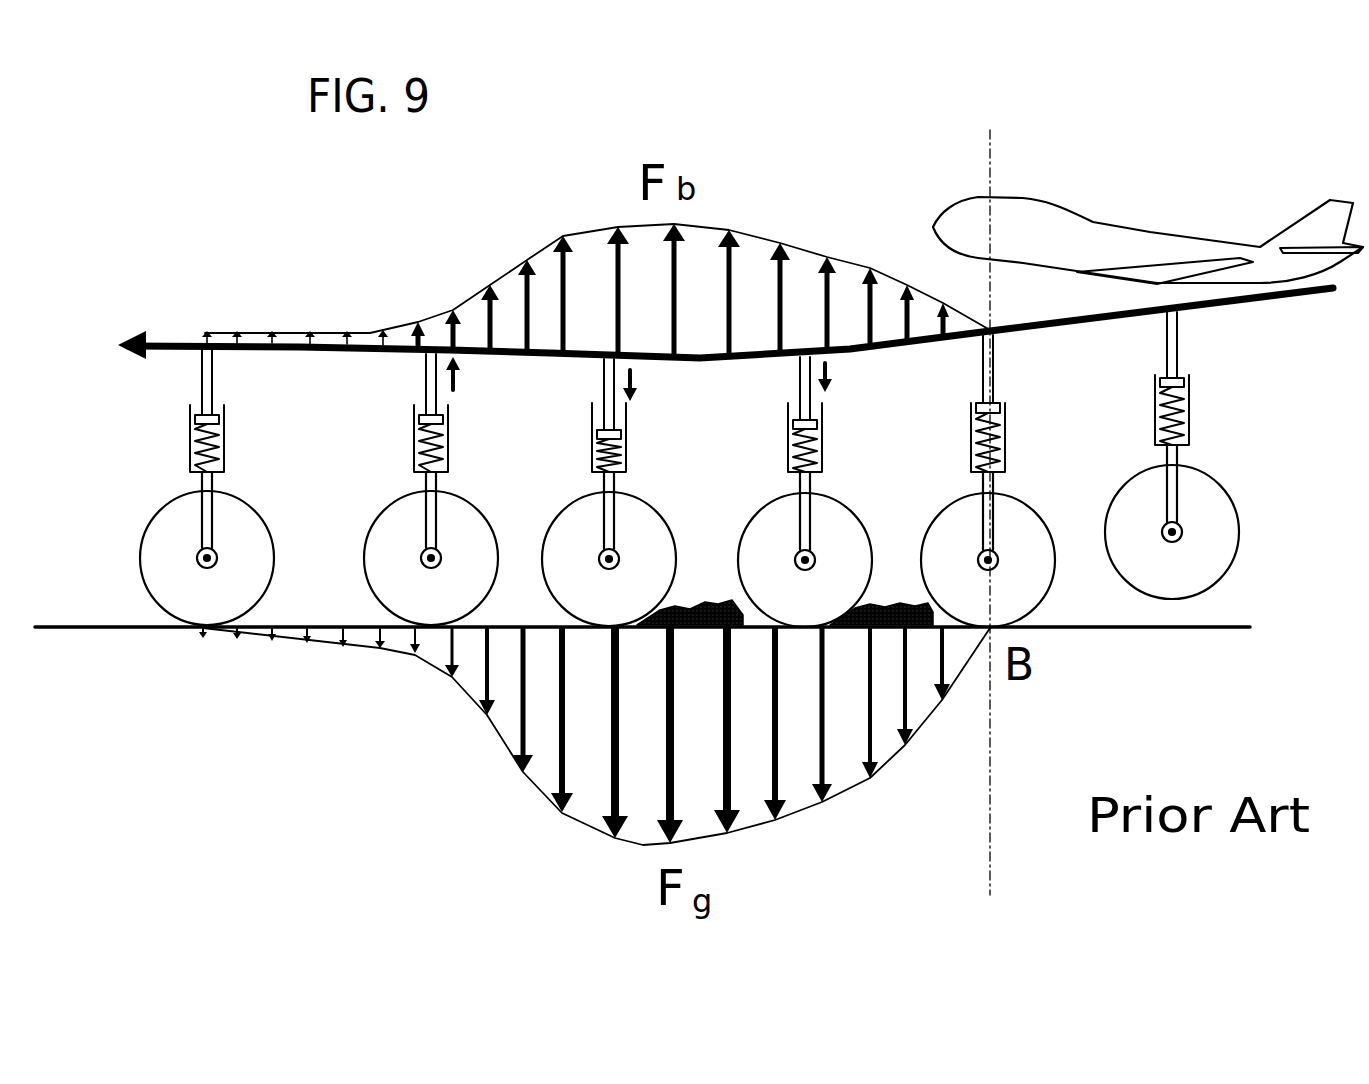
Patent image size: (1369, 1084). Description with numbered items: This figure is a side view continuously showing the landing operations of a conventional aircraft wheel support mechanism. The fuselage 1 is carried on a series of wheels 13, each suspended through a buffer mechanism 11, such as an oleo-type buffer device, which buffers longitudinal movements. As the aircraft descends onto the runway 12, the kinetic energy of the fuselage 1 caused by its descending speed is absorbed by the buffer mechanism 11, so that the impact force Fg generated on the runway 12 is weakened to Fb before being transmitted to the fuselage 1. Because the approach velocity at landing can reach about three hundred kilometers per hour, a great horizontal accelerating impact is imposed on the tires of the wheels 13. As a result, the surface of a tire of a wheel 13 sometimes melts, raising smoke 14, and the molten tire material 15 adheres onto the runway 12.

The fuselage 1 is at (1157, 240).
The buffer mechanism 11 is at (1007, 423).
The runway 12 is at (1077, 627).
The wheel 13 is at (828, 513).
The smoke 14 is at (883, 593).
The molten tire material 15 is at (717, 600).